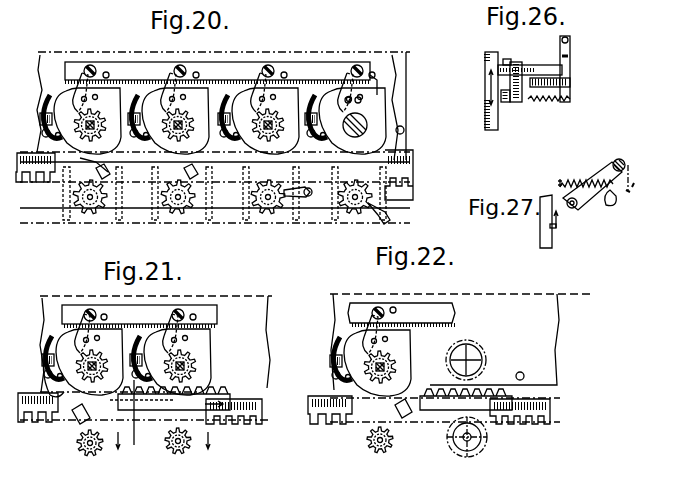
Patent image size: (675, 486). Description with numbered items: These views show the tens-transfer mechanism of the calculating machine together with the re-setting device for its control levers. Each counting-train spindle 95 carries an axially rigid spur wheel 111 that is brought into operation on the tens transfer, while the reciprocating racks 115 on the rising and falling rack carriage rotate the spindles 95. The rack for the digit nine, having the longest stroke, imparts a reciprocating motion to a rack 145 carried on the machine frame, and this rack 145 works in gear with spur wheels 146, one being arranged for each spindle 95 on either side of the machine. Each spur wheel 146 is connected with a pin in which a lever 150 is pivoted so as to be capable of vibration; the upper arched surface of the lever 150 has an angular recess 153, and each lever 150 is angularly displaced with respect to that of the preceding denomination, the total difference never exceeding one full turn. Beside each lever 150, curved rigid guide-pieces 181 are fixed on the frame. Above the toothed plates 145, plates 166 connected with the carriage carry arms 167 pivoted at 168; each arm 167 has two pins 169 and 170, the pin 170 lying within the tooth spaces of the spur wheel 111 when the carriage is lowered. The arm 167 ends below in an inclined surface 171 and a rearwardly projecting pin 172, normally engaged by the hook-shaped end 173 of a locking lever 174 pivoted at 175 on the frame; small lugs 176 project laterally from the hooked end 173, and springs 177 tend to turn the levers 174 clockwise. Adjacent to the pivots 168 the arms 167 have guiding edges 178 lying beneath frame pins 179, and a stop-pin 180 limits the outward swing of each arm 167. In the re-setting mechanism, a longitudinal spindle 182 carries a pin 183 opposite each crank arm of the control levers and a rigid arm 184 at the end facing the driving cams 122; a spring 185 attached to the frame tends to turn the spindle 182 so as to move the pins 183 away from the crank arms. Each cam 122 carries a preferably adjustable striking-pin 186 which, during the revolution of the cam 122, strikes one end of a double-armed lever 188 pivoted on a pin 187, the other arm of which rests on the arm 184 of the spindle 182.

In FIG. 22, the spindle 95 is at (368, 362).
In FIG. 20, the spur wheel 111 is at (292, 95).
In FIG. 21, the spur wheel 111 is at (60, 340).
In FIG. 22, the spur wheel 111 is at (482, 348).
In FIG. 21, the rack 115 is at (232, 392).
In FIG. 22, the rack 115 is at (440, 405).
In FIG. 26, the driving cam 122 is at (485, 73).
In FIG. 27, the driving cam 122 is at (540, 241).
In FIG. 20, the rack 145 is at (32, 158).
In FIG. 21, the rack 145 is at (28, 405).
In FIG. 22, the rack 145 is at (315, 402).
In FIG. 20, the spur wheel 146 is at (90, 215).
In FIG. 21, the spur wheel 146 is at (192, 452).
In FIG. 22, the spur wheel 146 is at (382, 454).
In FIG. 20, the lever 150 is at (292, 196).
In FIG. 20, the angular recess 153 is at (308, 197).
In FIG. 20, the plate 166 is at (137, 68).
In FIG. 21, the plate 166 is at (157, 310).
In FIG. 22, the plate 166 is at (433, 310).
In FIG. 20, the arm 167 is at (166, 89).
In FIG. 21, the arm 167 is at (118, 339).
In FIG. 22, the arm 167 is at (408, 340).
In FIG. 20, the pivot 168 is at (88, 65).
In FIG. 21, the pivot 168 is at (86, 311).
In FIG. 22, the pivot 168 is at (374, 309).
In FIG. 20, the pin 169 is at (72, 96).
In FIG. 21, the pin 169 is at (62, 332).
In FIG. 22, the pin 169 is at (368, 340).
In FIG. 20, the pin 170 is at (255, 98).
In FIG. 21, the pin 170 is at (93, 338).
In FIG. 22, the pin 170 is at (395, 329).
In FIG. 20, the inclined surface 171 is at (172, 160).
In FIG. 21, the inclined surface 171 is at (85, 400).
In FIG. 20, the pin 172 is at (248, 162).
In FIG. 22, the pin 172 is at (385, 405).
In FIG. 20, the hook-shaped end 173 is at (85, 162).
In FIG. 22, the hook-shaped end 173 is at (404, 420).
In FIG. 20, the locking lever 174 is at (250, 155).
In FIG. 21, the locking lever 174 is at (76, 418).
In FIG. 22, the locking lever 174 is at (345, 420).
In FIG. 20, the pivot 175 is at (218, 147).
In FIG. 21, the pivot 175 is at (42, 430).
In FIG. 20, the lug 176 is at (335, 157).
In FIG. 21, the spring 177 is at (44, 364).
In FIG. 20, the guiding edge 178 is at (190, 78).
In FIG. 21, the guiding edge 178 is at (106, 322).
In FIG. 20, the pin 179 is at (285, 72).
In FIG. 22, the pin 179 is at (393, 306).
In FIG. 21, the stop-pin 180 is at (136, 420).
In FIG. 22, the stop-pin 180 is at (455, 344).
In FIG. 20, the guide-piece 181 is at (98, 172).
In FIG. 26, the spindle 182 is at (571, 56).
In FIG. 27, the spindle 182 is at (603, 171).
In FIG. 26, the pin 183 is at (570, 42).
In FIG. 27, the pin 183 is at (612, 190).
In FIG. 26, the arm 184 is at (572, 72).
In FIG. 27, the arm 184 is at (608, 210).
In FIG. 26, the spring 185 is at (549, 108).
In FIG. 27, the spring 185 is at (580, 181).
In FIG. 26, the striking-pin 186 is at (506, 60).
In FIG. 27, the striking-pin 186 is at (573, 210).
In FIG. 26, the pin 187 is at (518, 62).
In FIG. 27, the pin 187 is at (575, 210).
In FIG. 26, the double-armed lever 188 is at (537, 67).
In FIG. 27, the double-armed lever 188 is at (586, 197).